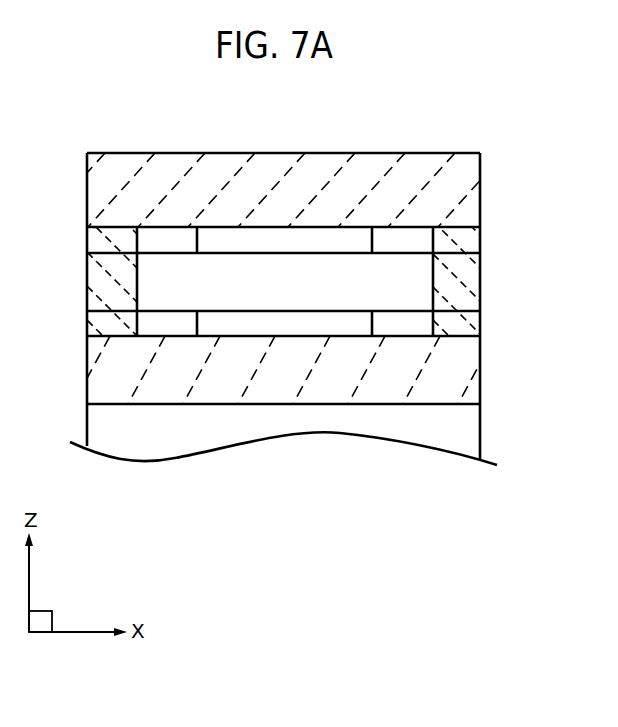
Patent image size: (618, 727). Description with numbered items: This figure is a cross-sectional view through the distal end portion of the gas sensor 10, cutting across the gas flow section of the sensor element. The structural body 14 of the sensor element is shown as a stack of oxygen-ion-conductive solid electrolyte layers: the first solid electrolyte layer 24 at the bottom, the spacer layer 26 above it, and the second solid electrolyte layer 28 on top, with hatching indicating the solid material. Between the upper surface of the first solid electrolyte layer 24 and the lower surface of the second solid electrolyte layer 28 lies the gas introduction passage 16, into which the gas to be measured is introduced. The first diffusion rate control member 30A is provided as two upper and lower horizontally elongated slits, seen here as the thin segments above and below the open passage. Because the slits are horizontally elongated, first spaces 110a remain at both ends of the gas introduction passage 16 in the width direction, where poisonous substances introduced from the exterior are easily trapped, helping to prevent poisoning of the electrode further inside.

The gas sensor 10 is at (76, 92).
The structural body 14 is at (375, 154).
The gas introduction passage 16 is at (267, 283).
The first solid electrolyte layer 24 is at (453, 372).
The spacer layer 26 is at (495, 227).
The second solid electrolyte layer 28 is at (453, 194).
The first diffusion rate control member 30A is at (263, 245).
The first spaces 110a is at (156, 283).